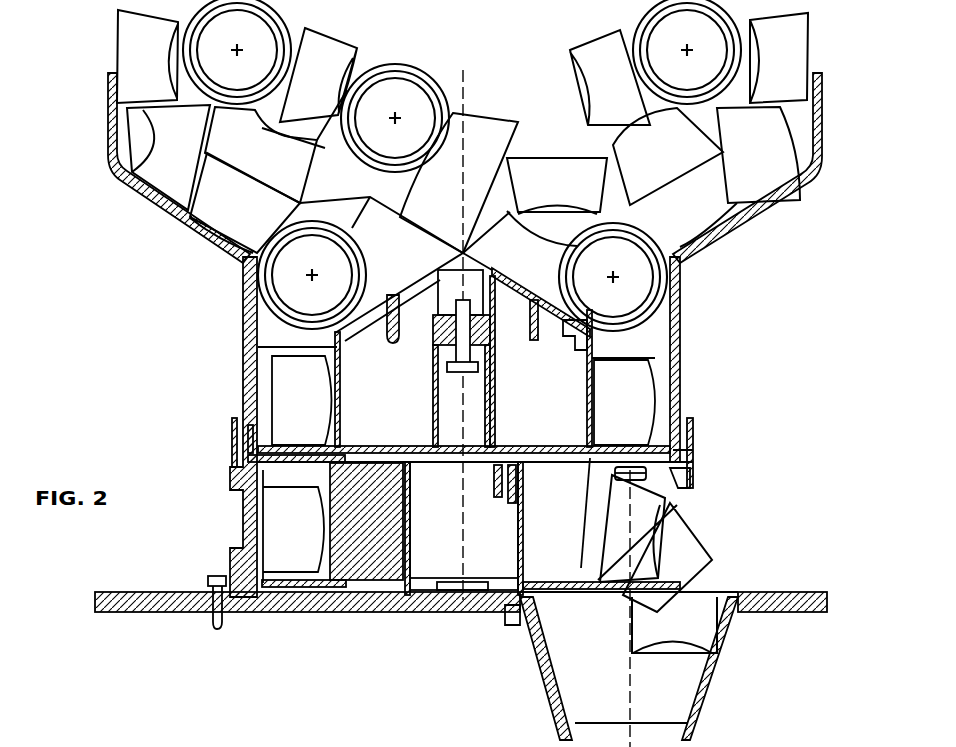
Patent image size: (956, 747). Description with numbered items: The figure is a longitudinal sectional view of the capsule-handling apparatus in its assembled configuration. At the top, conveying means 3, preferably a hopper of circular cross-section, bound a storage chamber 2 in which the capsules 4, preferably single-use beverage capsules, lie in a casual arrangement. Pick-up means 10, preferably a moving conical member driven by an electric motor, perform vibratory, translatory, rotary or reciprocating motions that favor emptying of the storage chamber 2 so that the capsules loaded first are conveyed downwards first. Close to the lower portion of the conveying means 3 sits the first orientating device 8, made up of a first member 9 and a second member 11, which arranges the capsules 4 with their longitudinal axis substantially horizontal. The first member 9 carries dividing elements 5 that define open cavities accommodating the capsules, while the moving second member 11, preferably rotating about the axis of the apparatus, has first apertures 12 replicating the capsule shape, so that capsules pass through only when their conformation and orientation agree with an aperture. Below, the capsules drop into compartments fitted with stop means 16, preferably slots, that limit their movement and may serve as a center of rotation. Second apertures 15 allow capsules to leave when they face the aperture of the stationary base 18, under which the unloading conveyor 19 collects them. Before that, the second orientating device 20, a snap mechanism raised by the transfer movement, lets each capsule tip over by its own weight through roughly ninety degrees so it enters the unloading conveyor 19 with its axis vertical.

The storage chamber 2 is at (541, 95).
The conveying means 3 is at (162, 208).
The capsules 4 is at (708, 200).
The dividing elements 5 is at (266, 368).
The first orientating device 8 is at (538, 360).
The first member 9 is at (582, 387).
The pick-up means 10 is at (415, 300).
The second member 11 is at (563, 447).
The first apertures 12 is at (291, 452).
The second apertures 15 is at (496, 746).
The stop means 16 is at (263, 585).
The stationary base 18 is at (372, 528).
The unloading conveyor 19 is at (720, 665).
The second orientating device 20 is at (612, 483).